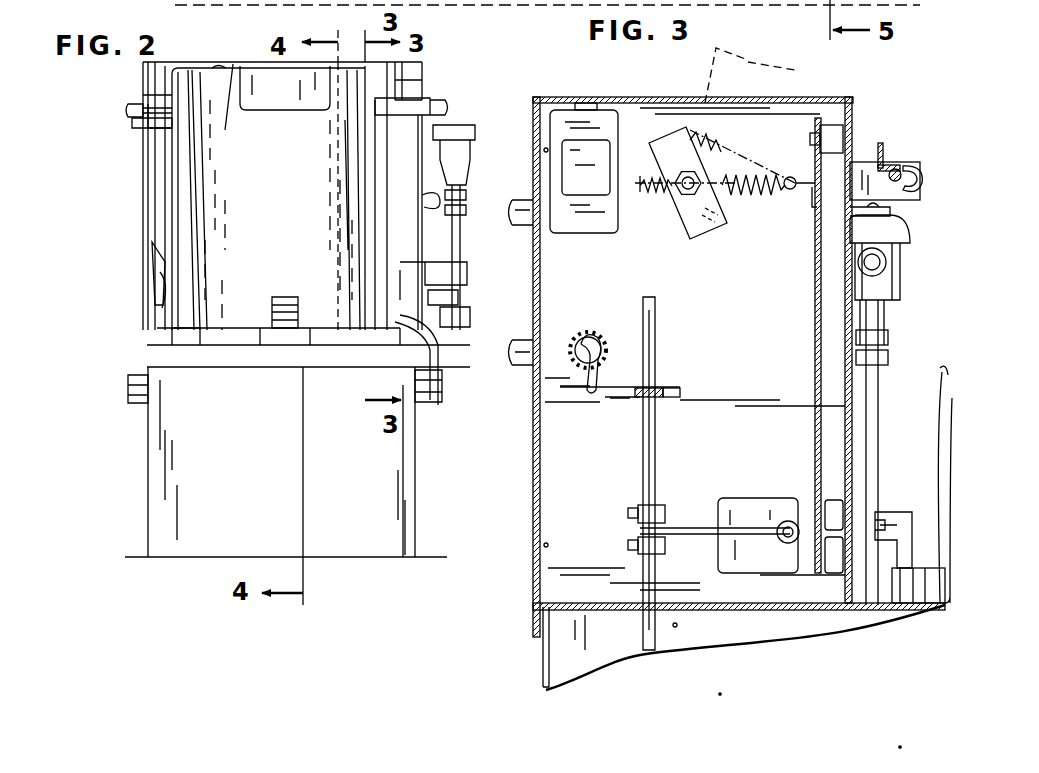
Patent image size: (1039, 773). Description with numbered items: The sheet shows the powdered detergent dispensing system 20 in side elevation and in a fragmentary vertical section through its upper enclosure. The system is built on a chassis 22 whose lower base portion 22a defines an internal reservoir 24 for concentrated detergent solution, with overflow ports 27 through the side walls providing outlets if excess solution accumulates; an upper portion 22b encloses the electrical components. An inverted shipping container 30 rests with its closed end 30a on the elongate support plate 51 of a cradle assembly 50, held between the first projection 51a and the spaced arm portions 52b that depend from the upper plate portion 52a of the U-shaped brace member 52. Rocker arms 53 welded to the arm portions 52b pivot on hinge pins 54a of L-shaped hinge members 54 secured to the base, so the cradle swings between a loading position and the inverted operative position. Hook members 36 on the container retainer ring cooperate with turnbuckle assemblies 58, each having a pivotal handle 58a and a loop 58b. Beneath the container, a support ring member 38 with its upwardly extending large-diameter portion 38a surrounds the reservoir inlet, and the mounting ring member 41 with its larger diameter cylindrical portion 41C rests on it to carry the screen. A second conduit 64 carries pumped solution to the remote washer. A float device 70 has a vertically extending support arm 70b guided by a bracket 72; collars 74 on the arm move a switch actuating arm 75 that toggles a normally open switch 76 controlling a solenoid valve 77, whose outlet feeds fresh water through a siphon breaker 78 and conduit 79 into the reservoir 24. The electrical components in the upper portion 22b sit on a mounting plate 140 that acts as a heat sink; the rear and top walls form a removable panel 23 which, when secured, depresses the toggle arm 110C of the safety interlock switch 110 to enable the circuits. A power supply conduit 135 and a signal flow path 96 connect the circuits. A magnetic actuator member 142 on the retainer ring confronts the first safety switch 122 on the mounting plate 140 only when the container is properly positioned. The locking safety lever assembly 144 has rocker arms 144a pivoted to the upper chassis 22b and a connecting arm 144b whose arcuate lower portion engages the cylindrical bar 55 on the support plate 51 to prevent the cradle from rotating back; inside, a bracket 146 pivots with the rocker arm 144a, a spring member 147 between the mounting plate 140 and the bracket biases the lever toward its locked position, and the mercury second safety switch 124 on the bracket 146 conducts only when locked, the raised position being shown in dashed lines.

In FIG. 2, the powdered detergent dispensing system 20 is at (116, 192).
In FIG. 3, the powdered detergent dispensing system 20 is at (503, 616).
In FIG. 2, the chassis 22 is at (146, 500).
In FIG. 3, the chassis 22 is at (538, 689).
In FIG. 2, the lower base portion 22a is at (158, 527).
In FIG. 3, the lower base portion 22a is at (543, 672).
In FIG. 2, the upper portion 22b is at (150, 77).
In FIG. 3, the upper portion 22b is at (560, 95).
In FIG. 3, the panel 23 is at (523, 462).
In FIG. 3, the internal reservoir 24 is at (585, 665).
In FIG. 2, the overflow ports 27 is at (128, 408).
In FIG. 2, the shipping container 30 is at (193, 160).
In FIG. 3, the shipping container 30 is at (942, 372).
In FIG. 2, the closed end 30a is at (222, 68).
In FIG. 2, the hook members 36 is at (150, 322).
In FIG. 2, the support ring member 38 is at (222, 347).
In FIG. 3, the support ring member 38 is at (928, 592).
In FIG. 2, the large-diameter cylindrical portion 38a is at (237, 345).
In FIG. 3, the large-diameter cylindrical portion 38a is at (908, 588).
In FIG. 2, the mounting ring member 41 is at (282, 335).
In FIG. 2, the larger diameter cylindrical portion 41C is at (295, 335).
In FIG. 2, the cradle assembly 50 is at (168, 197).
In FIG. 2, the elongate support plate 51 is at (290, 60).
In FIG. 2, the first projection 51a is at (298, 111).
In FIG. 2, the U-shaped brace member 52 is at (168, 215).
In FIG. 2, the upper plate portion 52a is at (187, 112).
In FIG. 2, the elongate spaced arm portions 52b is at (168, 142).
In FIG. 2, the rocker arms 53 is at (180, 258).
In FIG. 2, the L-shaped hinge member 54 is at (160, 347).
In FIG. 2, the hinge pin 54a is at (172, 318).
In FIG. 3, the cylindrical bar member 55 is at (906, 167).
In FIG. 2, the turnbuckle assemblies 58 is at (148, 266).
In FIG. 2, the pivotal handle 58a is at (150, 273).
In FIG. 2, the loop 58b is at (158, 302).
In FIG. 2, the second conduit 64 is at (445, 385).
In FIG. 3, the float device 70 is at (630, 518).
In FIG. 3, the support arm 70b is at (657, 440).
In FIG. 3, the bracket 72 is at (672, 390).
In FIG. 3, the collars 74 is at (638, 548).
In FIG. 3, the switch actuating arm 75 is at (686, 528).
In FIG. 3, the normally open switch 76 is at (745, 498).
In FIG. 2, the solenoid valve 77 is at (470, 278).
In FIG. 2, the siphon breaker 78 is at (466, 165).
In FIG. 3, the siphon breaker 78 is at (897, 268).
In FIG. 3, the conduit 79 is at (878, 425).
In FIG. 2, the signal flow path 96 is at (448, 206).
In FIG. 3, the signal flow path 96 is at (525, 365).
In FIG. 3, the safety interlock switch 110 is at (578, 233).
In FIG. 3, the toggle arm 110C is at (588, 103).
In FIG. 3, the first safety switch 122 is at (828, 500).
In FIG. 3, the second safety switch 124 is at (696, 242).
In FIG. 3, the power supply conduit 135 is at (525, 228).
In FIG. 3, the mounting plate 140 is at (815, 313).
In FIG. 2, the magnetic actuator members 142 is at (278, 297).
In FIG. 3, the magnetic actuator members 142 is at (895, 512).
In FIG. 2, the locking safety lever assembly 144 is at (141, 98).
In FIG. 3, the locking safety lever assembly 144 is at (885, 145).
In FIG. 2, the rocker arms 144a is at (132, 122).
In FIG. 3, the rocker arms 144a is at (918, 226).
In FIG. 2, the connecting arm 144b is at (186, 118).
In FIG. 3, the bracket 146 is at (662, 200).
In FIG. 3, the spring member 147 is at (758, 165).